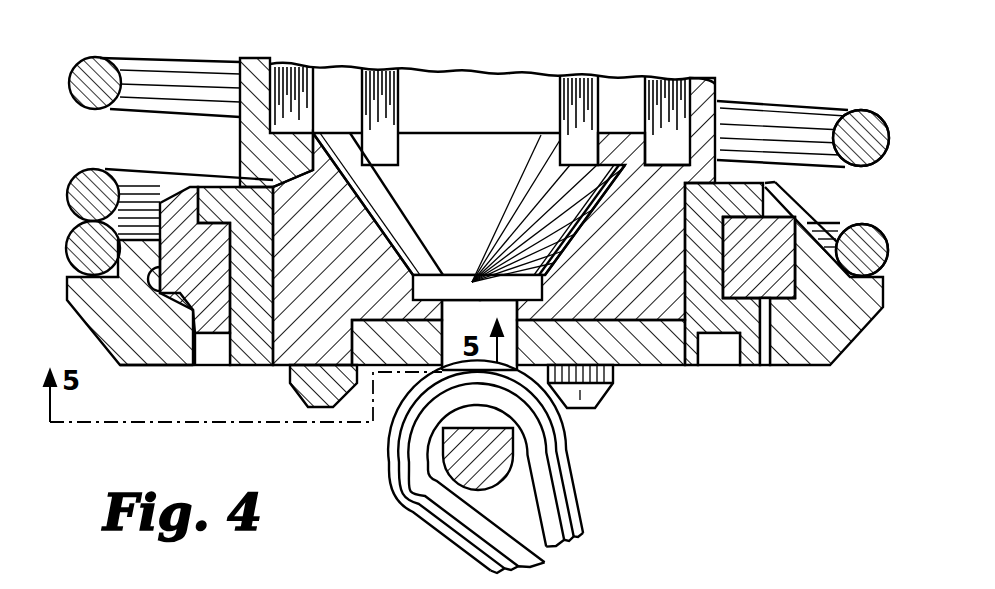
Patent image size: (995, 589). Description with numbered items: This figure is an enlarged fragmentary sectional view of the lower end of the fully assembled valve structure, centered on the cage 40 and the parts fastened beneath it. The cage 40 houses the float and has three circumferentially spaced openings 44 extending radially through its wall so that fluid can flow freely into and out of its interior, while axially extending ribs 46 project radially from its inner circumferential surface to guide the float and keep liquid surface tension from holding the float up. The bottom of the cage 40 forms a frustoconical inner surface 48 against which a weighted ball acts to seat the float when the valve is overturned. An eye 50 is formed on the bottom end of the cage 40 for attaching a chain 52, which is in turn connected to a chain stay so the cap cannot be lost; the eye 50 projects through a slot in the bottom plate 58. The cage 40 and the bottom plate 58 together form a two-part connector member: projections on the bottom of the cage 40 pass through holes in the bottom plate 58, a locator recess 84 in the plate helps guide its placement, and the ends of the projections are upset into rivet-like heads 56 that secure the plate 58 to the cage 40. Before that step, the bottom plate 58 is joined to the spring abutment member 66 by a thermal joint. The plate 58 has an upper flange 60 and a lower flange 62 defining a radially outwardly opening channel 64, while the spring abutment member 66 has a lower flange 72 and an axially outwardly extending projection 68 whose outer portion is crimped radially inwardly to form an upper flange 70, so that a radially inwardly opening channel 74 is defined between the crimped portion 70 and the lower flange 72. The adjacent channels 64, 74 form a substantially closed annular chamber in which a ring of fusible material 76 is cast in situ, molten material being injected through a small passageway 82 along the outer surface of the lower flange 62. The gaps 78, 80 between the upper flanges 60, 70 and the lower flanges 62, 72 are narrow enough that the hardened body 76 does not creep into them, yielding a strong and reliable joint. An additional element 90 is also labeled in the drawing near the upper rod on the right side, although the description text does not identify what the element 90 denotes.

The cage 40 is at (708, 80).
The openings 44 is at (330, 90).
The ribs 46 is at (398, 100).
The frustoconical inner surface 48 is at (350, 207).
The eye 50 is at (500, 457).
The chain 52 is at (583, 515).
The rivet-like heads 56 is at (302, 413).
The bottom plate 58 is at (403, 372).
The upper flange 60 is at (813, 130).
The lower flange 62 is at (752, 367).
The channel 64 is at (743, 262).
The spring abutment member 66 is at (850, 350).
The projection 68 is at (127, 253).
The upper flange 70 is at (160, 203).
The lower flange 72 is at (167, 357).
The channel 74 is at (122, 365).
The body of fusible material 76 is at (230, 258).
The gap 78 is at (770, 180).
The gap 80 is at (765, 367).
The passageway 82 is at (210, 353).
The locator recess 84 is at (707, 355).
The rod 90 is at (810, 102).